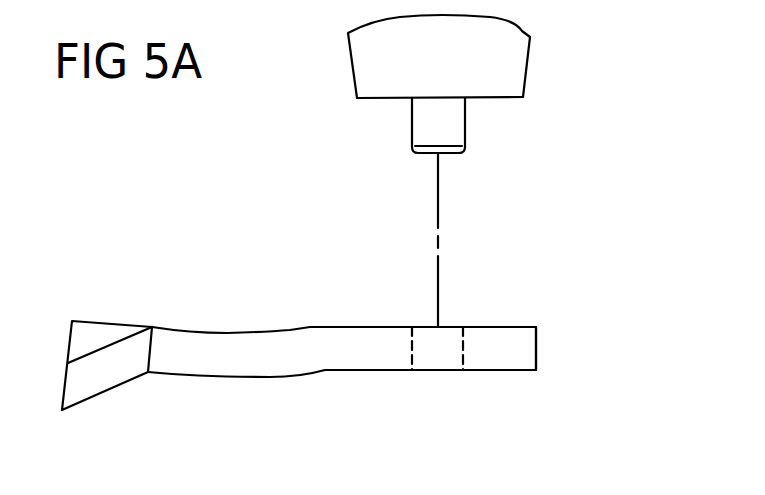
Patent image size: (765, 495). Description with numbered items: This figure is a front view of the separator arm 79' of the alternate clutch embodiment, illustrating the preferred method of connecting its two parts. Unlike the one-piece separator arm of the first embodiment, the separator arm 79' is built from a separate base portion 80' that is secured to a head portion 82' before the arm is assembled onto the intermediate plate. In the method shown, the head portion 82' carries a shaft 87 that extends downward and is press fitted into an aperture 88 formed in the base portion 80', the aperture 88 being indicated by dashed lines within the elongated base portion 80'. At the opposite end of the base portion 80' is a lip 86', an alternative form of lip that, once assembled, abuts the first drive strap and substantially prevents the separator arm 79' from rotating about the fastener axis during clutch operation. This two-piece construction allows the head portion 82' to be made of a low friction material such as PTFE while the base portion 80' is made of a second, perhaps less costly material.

The separator arm 79' is at (387, 228).
The head portion 82' is at (400, 56).
The shaft 87 is at (455, 126).
The aperture 88 is at (414, 340).
The base portion 80' is at (529, 320).
The lip 86' is at (121, 381).